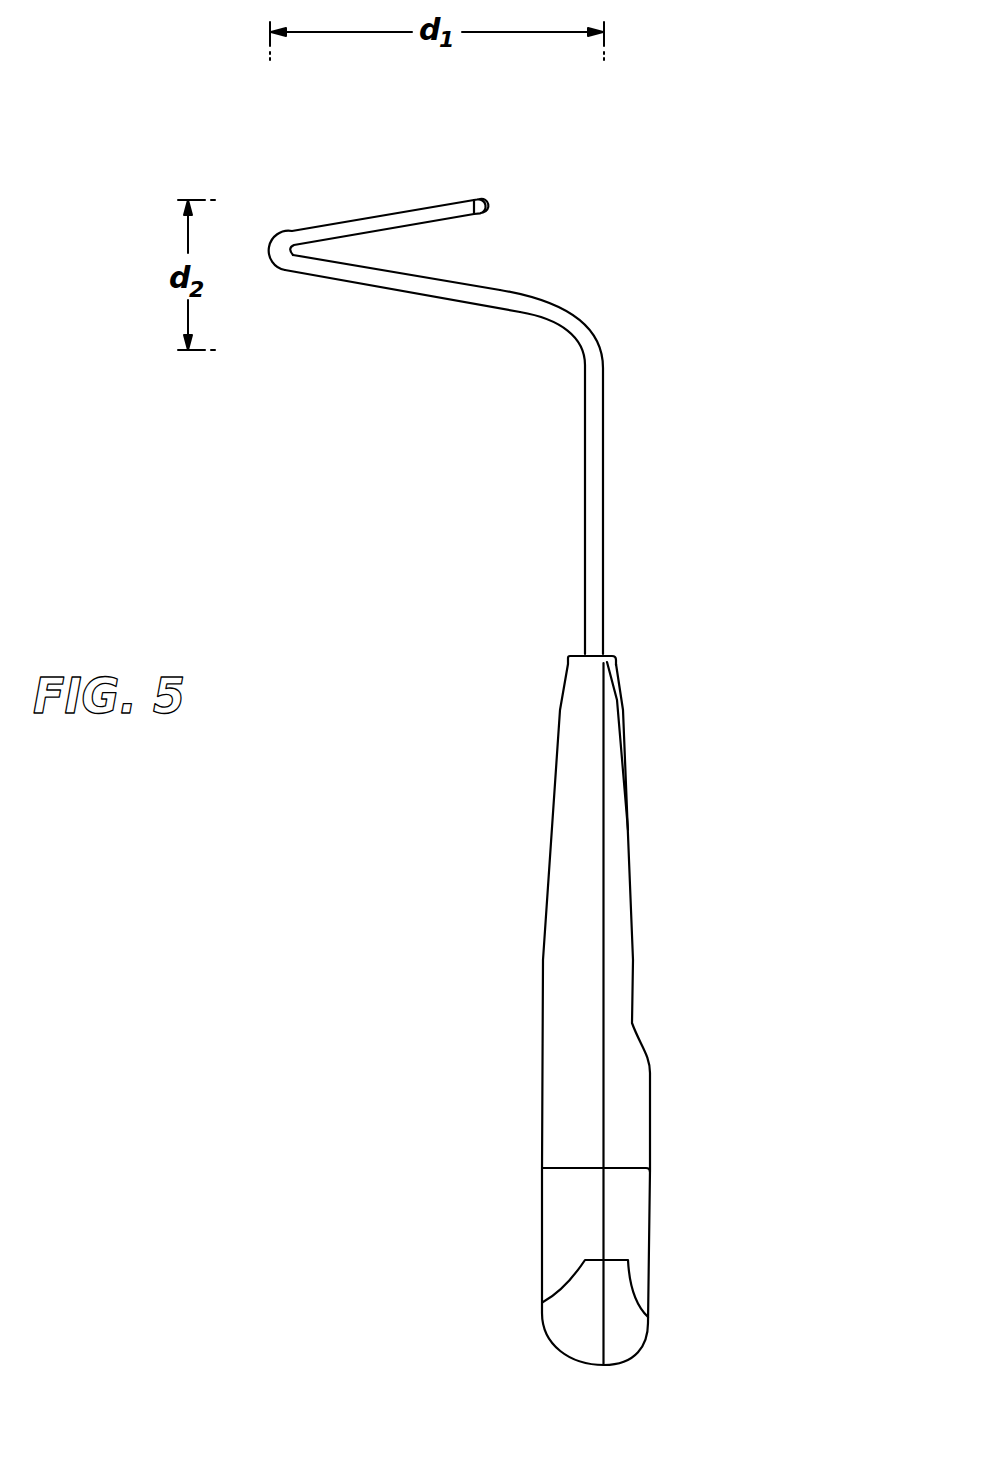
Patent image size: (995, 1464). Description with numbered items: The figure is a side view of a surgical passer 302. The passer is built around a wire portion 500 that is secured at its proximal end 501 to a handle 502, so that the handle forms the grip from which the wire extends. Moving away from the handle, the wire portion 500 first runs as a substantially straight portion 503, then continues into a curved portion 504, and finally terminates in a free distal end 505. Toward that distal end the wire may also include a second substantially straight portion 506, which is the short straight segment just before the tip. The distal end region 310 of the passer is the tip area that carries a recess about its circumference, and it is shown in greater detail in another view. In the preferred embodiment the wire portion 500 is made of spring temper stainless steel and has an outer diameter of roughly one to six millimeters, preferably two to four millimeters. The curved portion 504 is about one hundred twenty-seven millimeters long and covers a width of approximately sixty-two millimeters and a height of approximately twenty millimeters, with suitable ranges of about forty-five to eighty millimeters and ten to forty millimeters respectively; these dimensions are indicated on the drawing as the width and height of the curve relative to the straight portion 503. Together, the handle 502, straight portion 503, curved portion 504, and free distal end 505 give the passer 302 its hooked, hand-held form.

The surgical passer 302 is at (670, 618).
The distal end region 310 is at (413, 187).
The wire portion 500 is at (582, 442).
The proximal end 501 is at (587, 645).
The handle 502 is at (573, 965).
The substantially straight portion 503 is at (608, 387).
The curved portion 504 is at (518, 291).
The free distal end 505 is at (494, 202).
The second substantially straight portion 506 is at (438, 197).